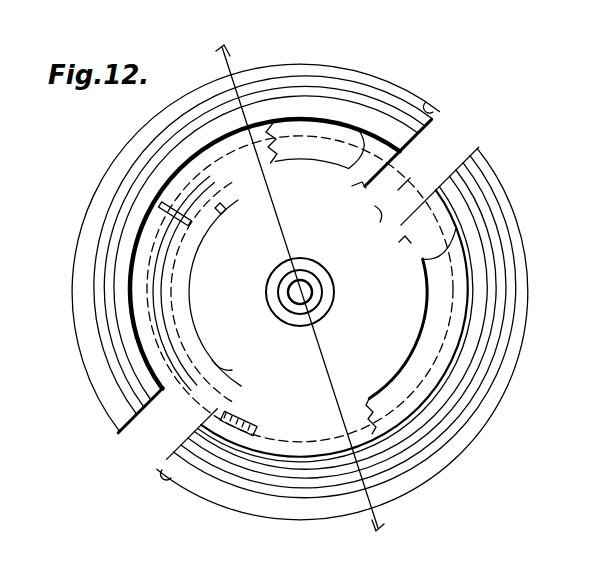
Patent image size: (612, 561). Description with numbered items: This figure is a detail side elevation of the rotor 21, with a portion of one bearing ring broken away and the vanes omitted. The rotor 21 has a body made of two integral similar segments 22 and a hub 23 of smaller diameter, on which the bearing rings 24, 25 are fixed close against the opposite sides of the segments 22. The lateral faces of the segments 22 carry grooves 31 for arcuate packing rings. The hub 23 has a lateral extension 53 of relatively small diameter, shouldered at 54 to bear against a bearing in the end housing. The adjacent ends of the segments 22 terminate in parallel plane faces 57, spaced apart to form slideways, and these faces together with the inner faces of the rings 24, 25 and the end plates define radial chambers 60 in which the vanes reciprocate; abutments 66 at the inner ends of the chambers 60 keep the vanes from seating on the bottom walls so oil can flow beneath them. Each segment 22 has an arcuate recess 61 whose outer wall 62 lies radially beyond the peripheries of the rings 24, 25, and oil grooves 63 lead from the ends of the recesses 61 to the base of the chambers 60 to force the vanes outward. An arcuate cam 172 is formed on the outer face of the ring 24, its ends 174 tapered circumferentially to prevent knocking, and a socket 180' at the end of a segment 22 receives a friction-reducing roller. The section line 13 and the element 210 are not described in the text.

The section line 13 is at (311, 285).
The rotor 21 is at (303, 291).
The segments 22 is at (411, 97).
The hub 23 is at (385, 335).
The bearing ring 24 is at (371, 440).
The bearing ring 25 is at (399, 420).
The grooves 31 is at (118, 233).
The lateral extension 53 is at (318, 312).
The shoulder 54 is at (326, 301).
The plane faces 57 is at (446, 172).
The radial chambers 60 is at (392, 186).
The arcuate recess 61 is at (308, 176).
The outer walls 62 is at (183, 165).
The oil grooves 63 is at (356, 188).
The abutments 66 is at (378, 213).
The arcuate cam 172 is at (157, 292).
The cam ends 174 is at (165, 222).
The socket 180' is at (310, 290).
The pin 210 is at (226, 209).